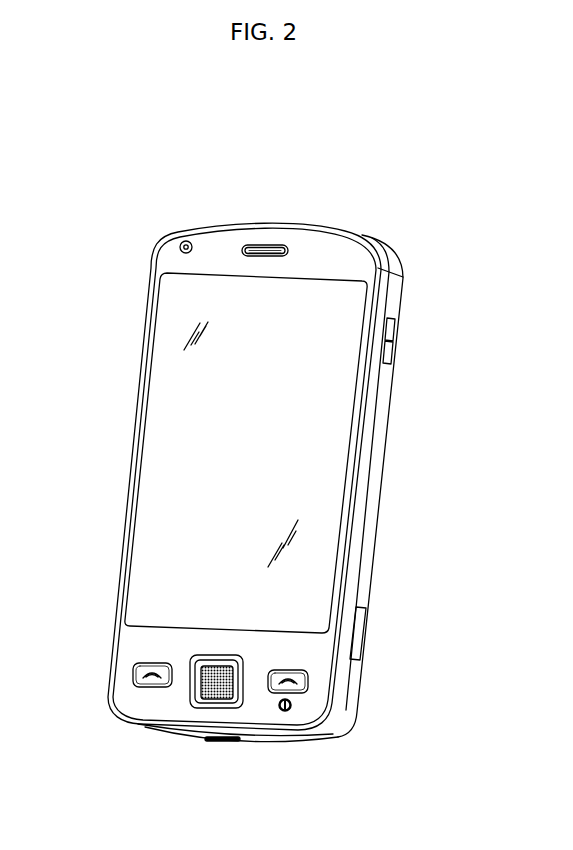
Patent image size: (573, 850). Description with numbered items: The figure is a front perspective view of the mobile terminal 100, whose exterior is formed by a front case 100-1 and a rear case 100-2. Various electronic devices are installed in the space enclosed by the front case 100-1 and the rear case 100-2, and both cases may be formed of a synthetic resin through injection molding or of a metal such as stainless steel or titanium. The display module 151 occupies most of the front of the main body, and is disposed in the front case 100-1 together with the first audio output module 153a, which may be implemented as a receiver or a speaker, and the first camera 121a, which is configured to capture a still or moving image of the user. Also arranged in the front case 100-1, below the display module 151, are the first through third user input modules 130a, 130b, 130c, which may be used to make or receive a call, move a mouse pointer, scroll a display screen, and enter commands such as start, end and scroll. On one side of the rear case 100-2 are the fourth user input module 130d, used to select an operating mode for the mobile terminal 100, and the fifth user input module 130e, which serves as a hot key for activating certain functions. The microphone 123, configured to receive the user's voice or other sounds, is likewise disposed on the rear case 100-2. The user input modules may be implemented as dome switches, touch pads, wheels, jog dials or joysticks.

The mobile terminal 100 is at (121, 248).
The front case 100-1 is at (381, 252).
The rear case 100-2 is at (397, 292).
The display module 151 is at (165, 467).
The first camera 121a is at (185, 241).
The first audio output module 153a is at (266, 245).
The first user input module 130a is at (150, 685).
The second user input module 130b is at (205, 700).
The third user input module 130c is at (301, 694).
The fourth user input module 130d is at (393, 357).
The fifth user input module 130e is at (368, 624).
The microphone 123 is at (222, 742).